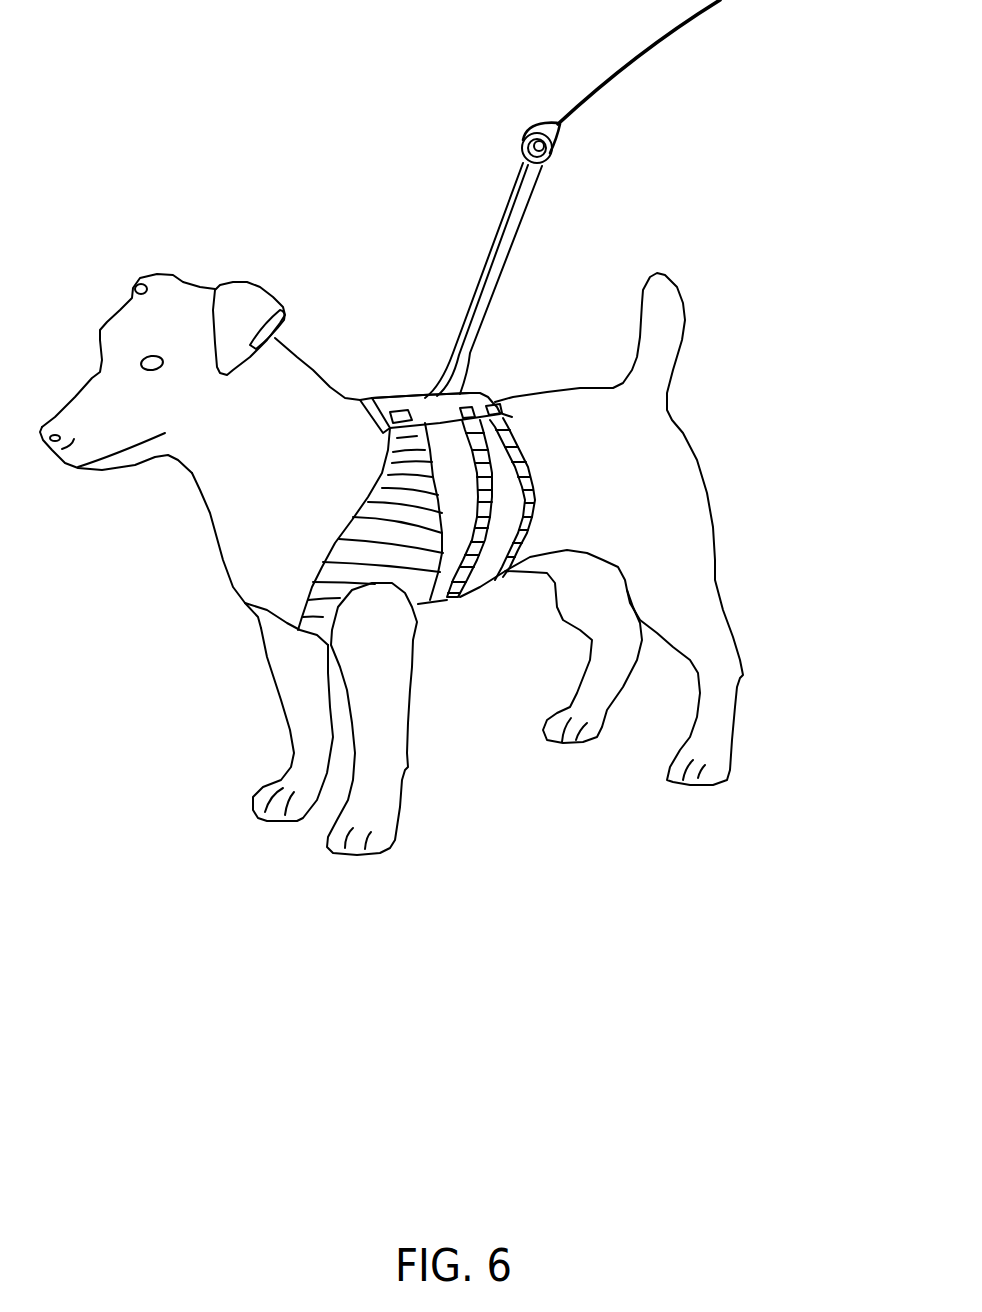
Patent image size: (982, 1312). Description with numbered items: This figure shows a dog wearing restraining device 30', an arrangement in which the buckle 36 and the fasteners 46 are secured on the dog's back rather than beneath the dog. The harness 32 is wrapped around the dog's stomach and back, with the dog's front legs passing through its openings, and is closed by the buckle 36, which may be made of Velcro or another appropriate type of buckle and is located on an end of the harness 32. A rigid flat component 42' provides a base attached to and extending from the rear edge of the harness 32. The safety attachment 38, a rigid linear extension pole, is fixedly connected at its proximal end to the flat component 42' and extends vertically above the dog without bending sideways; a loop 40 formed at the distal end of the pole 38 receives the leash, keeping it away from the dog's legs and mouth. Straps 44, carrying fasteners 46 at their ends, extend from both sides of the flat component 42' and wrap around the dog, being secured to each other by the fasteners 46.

The restraining device 30' is at (399, 299).
The harness 32 is at (307, 582).
The buckle 36 is at (400, 413).
The safety attachment 38 is at (500, 215).
The loop 40 is at (553, 152).
The flat component 42' is at (402, 368).
The straps 44 is at (530, 505).
The fasteners 46 is at (495, 401).